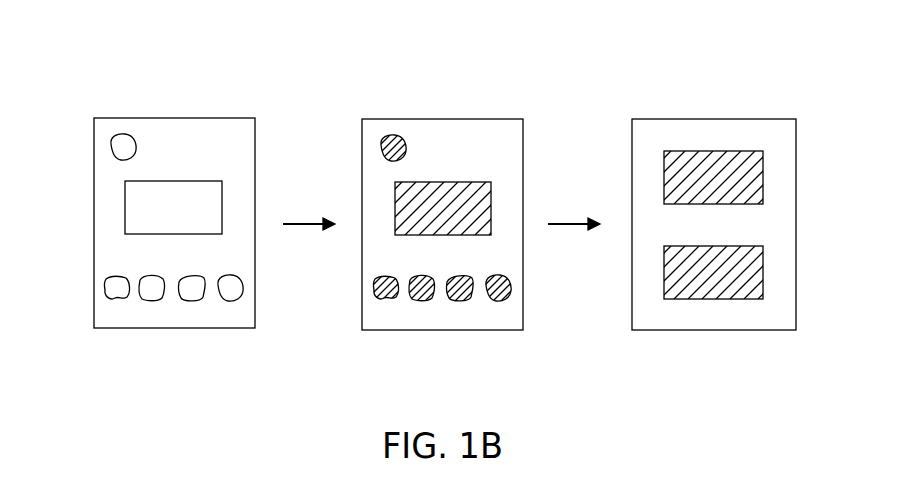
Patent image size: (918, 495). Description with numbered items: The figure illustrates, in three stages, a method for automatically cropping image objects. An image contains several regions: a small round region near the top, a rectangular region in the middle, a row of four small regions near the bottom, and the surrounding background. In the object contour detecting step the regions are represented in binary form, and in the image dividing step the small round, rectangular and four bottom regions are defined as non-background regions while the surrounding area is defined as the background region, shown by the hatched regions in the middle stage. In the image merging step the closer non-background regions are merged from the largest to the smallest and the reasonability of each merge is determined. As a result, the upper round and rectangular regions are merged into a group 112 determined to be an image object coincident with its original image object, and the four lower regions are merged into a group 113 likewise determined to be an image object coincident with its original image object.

The group 112 is at (757, 177).
The group 113 is at (757, 272).